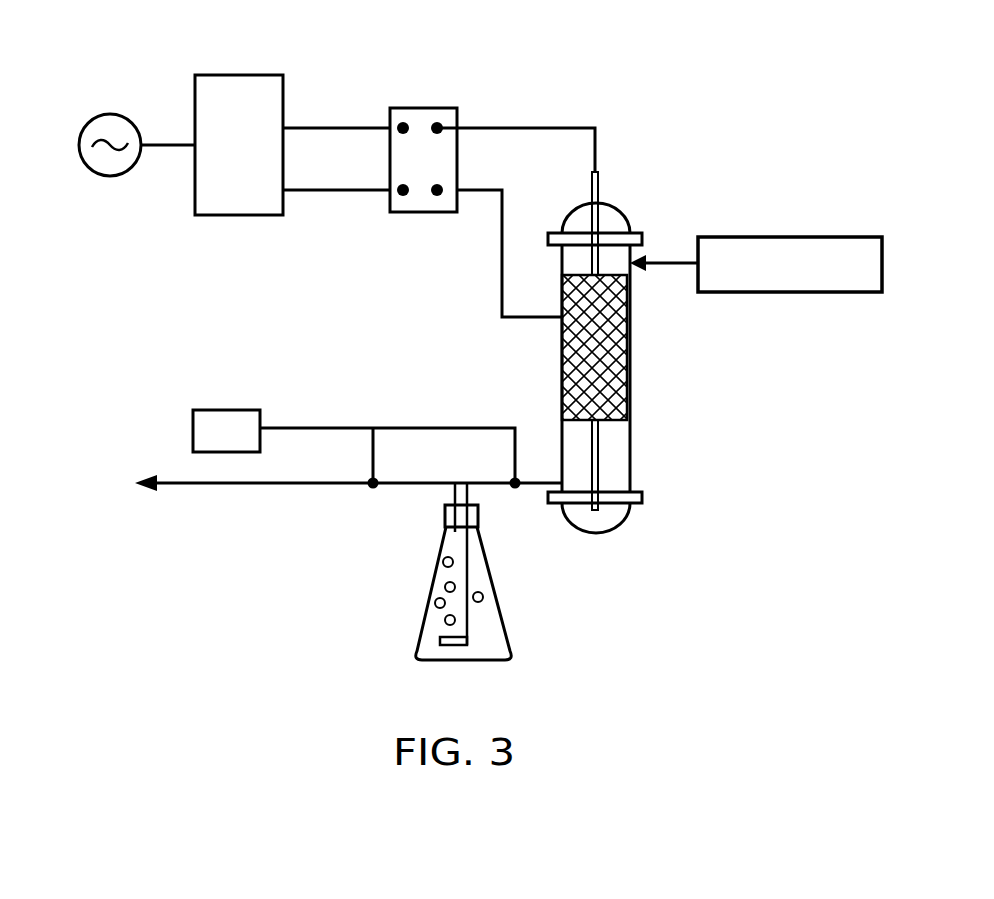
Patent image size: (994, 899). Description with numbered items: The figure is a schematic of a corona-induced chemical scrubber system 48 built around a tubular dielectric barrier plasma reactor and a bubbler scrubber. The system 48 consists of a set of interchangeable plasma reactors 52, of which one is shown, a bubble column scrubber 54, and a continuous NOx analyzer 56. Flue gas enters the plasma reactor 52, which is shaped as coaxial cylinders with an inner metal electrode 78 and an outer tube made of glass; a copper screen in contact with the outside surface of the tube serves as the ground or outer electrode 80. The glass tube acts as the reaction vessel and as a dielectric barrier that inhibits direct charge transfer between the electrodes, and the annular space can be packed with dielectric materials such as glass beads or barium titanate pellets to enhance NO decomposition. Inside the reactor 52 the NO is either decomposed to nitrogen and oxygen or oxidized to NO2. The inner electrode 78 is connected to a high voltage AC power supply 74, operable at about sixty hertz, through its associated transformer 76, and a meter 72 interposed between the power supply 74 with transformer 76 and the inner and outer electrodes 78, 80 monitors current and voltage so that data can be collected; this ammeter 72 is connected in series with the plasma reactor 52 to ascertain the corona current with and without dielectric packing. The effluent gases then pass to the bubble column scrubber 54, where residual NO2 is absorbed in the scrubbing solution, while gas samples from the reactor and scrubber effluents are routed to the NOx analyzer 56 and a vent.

The system 48 is at (665, 602).
The plasma reactor 52 is at (615, 450).
The bubble column scrubber 54 is at (487, 599).
The NOx analyzer 56 is at (215, 410).
The meter 72 is at (422, 202).
The power supply 74 is at (105, 170).
The transformer 76 is at (237, 75).
The inner electrode 78 is at (594, 143).
The outer electrode 80 is at (615, 347).